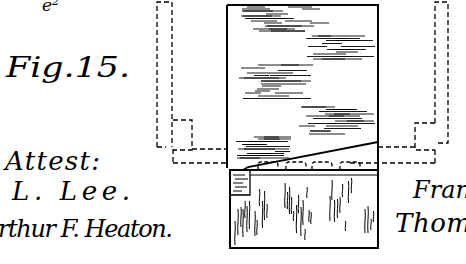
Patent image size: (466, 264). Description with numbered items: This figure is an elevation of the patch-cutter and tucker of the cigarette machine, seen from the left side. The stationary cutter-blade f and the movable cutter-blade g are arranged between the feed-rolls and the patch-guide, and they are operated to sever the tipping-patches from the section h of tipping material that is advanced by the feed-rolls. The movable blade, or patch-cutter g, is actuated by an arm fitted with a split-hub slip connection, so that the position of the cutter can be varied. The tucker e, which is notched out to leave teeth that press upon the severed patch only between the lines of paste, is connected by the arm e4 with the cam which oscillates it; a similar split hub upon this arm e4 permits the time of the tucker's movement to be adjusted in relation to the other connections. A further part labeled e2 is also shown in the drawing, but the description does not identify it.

The tucker e is at (217, 167).
The frame lug e2 is at (184, 121).
The arm e4 is at (173, 56).
The movable cutter-blade g is at (302, 86).
The section of tipping material h is at (283, 173).
The stationary cutter-blade f is at (304, 195).